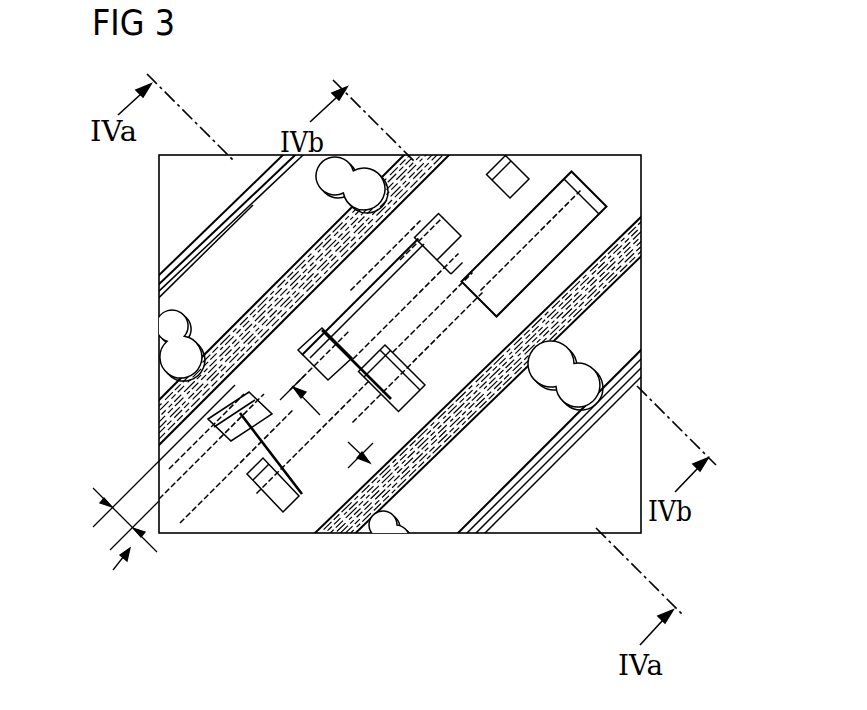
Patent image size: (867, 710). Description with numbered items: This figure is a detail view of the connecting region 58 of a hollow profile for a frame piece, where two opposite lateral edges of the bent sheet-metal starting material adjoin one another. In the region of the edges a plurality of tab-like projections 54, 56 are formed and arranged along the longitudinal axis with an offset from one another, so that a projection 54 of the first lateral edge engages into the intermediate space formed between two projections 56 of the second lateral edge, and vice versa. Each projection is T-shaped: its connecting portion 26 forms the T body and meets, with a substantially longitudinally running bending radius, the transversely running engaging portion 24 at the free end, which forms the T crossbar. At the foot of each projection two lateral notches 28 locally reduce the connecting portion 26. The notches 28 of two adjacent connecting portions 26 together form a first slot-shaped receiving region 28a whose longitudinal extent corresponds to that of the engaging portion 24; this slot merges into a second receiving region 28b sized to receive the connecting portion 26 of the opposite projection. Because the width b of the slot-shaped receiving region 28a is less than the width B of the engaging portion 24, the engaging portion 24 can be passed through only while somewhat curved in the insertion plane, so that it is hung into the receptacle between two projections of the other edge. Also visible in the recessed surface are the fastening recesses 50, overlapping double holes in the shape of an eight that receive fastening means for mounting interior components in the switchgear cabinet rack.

The engaging portion 24 is at (566, 317).
The connecting portion 26 is at (480, 203).
The lateral notches 28 is at (443, 215).
The first slot-shaped receiving region 28a is at (352, 297).
The second receiving region 28b is at (322, 330).
The fastening recesses 50 is at (556, 400).
The projections of the first lateral edge 54 is at (512, 250).
The projections of the second lateral edge 56 is at (400, 308).
The connecting region 58 is at (113, 565).
The width of the first slot-shaped receiving region b is at (130, 525).
The width of the engaging portion B is at (326, 421).